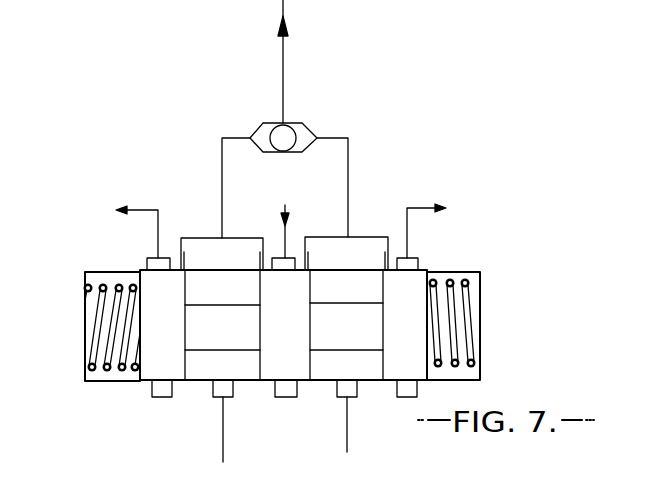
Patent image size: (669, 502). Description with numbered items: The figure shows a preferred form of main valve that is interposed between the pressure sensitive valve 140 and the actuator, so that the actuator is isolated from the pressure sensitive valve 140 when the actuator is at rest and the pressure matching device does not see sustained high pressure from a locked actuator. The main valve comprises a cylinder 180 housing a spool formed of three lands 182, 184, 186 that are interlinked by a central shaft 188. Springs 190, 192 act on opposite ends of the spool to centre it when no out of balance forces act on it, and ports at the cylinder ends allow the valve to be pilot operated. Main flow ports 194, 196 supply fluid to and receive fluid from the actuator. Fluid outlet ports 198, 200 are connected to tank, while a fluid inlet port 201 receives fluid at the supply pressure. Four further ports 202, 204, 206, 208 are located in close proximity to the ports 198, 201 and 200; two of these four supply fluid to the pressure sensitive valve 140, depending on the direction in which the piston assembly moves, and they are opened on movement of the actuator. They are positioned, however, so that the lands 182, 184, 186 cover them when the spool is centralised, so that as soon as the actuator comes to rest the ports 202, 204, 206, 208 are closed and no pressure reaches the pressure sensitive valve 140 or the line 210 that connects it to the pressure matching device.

The pressure sensitive valve 140 is at (309, 124).
The cylinder 180 is at (472, 263).
The land 182 is at (173, 321).
The land 184 is at (293, 323).
The land 186 is at (417, 322).
The central shaft 188 is at (358, 340).
The spring 190 is at (92, 289).
The spring 192 is at (466, 287).
The main flow port 194 is at (218, 398).
The main flow port 196 is at (352, 398).
The fluid outlet port 198 is at (148, 260).
The fluid outlet port 200 is at (417, 258).
The fluid inlet port 201 is at (276, 254).
The port 202 is at (185, 258).
The port 204 is at (258, 260).
The port 206 is at (306, 255).
The port 208 is at (386, 258).
The line 210 is at (286, 78).